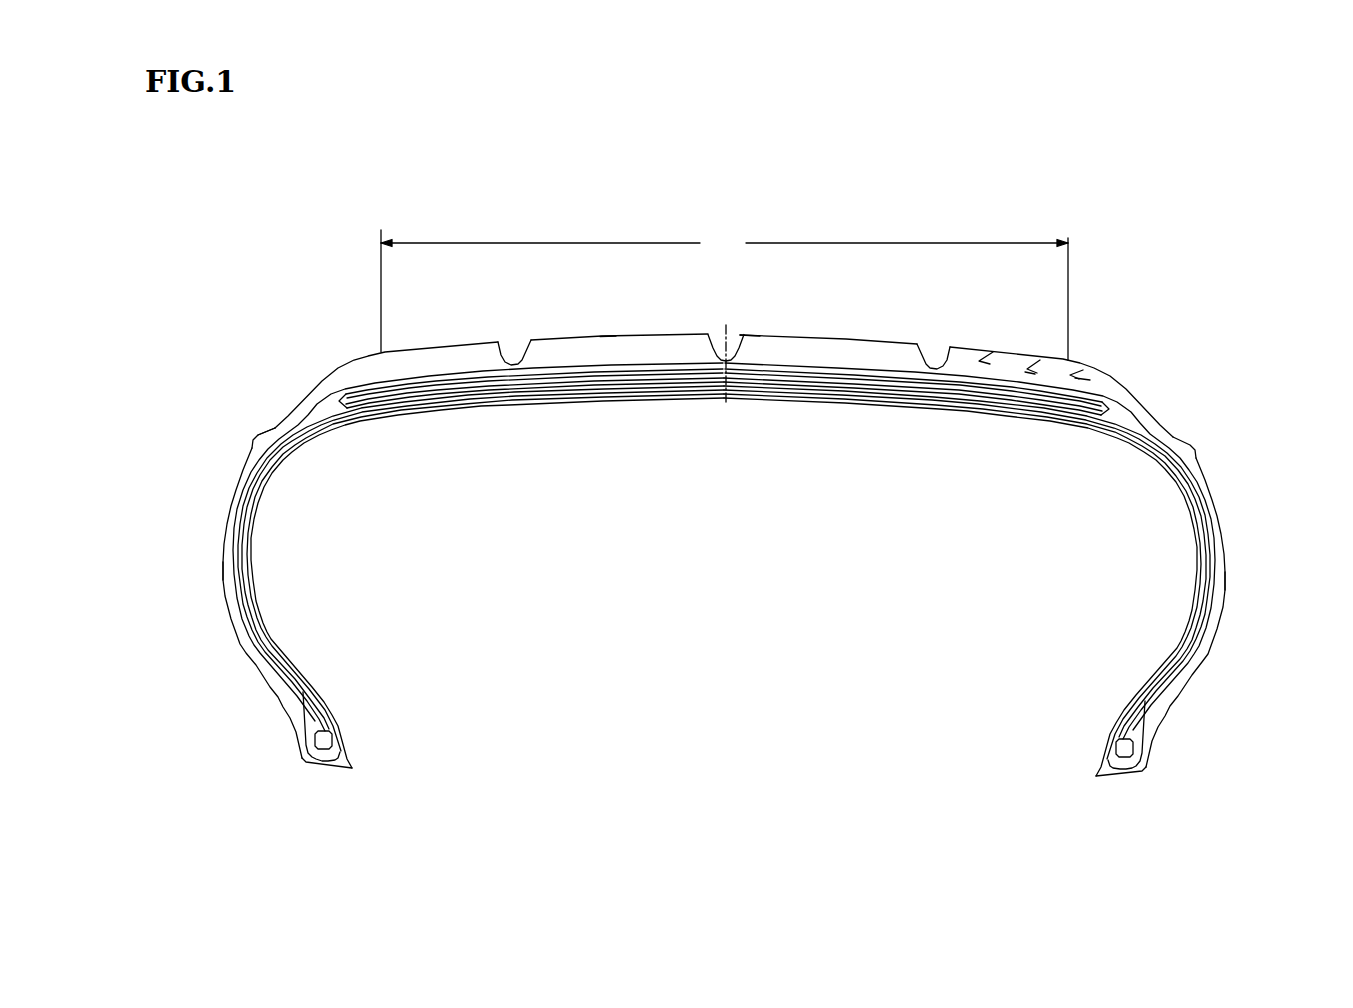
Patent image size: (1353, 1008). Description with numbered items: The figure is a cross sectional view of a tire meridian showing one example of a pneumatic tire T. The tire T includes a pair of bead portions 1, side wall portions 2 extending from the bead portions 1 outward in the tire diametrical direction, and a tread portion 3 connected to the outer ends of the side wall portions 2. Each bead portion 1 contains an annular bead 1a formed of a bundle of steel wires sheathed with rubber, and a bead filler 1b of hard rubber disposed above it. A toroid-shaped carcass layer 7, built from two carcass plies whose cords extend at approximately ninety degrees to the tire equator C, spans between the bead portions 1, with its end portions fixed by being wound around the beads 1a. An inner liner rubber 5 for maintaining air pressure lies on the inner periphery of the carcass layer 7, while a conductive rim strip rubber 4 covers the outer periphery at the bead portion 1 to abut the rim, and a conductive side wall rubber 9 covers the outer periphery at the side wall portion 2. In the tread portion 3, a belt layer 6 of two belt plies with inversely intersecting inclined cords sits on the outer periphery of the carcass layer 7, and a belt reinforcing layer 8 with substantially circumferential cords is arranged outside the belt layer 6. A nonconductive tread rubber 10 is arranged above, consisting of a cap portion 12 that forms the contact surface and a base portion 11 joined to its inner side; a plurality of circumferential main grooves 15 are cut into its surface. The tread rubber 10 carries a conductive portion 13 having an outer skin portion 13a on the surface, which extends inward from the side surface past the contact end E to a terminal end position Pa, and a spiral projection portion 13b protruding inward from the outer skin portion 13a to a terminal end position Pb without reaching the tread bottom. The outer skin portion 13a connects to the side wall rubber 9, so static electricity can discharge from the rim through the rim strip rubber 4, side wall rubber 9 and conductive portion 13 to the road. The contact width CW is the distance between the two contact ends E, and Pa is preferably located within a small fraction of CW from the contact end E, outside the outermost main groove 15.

The bead portion 1 is at (296, 750).
The bead 1a is at (324, 742).
The bead filler 1b is at (312, 703).
The side wall portion 2 is at (218, 500).
The tread portion 3 is at (486, 330).
The rim strip rubber 4 is at (283, 702).
The inner liner rubber 5 is at (368, 417).
The belt layer 6 is at (597, 382).
The carcass layer 7 is at (1195, 482).
The belt reinforcing layer 8 is at (430, 378).
The side wall rubber 9 is at (230, 579).
The tread rubber 10 is at (765, 335).
The base portion 11 is at (563, 371).
The cap portion 12 is at (612, 338).
The conductive portion 13 is at (1034, 361).
The outer skin portion 13a is at (1097, 365).
The projection portion 13b is at (1082, 381).
The main groove 15 is at (512, 364).
The pneumatic tire T is at (283, 312).
The contact end E is at (722, 279).
The contact width CW is at (724, 243).
The tire equator C is at (727, 351).
The terminal end position of outer skin portion Pa is at (991, 352).
The terminal end position of projection portion Pb is at (1030, 374).